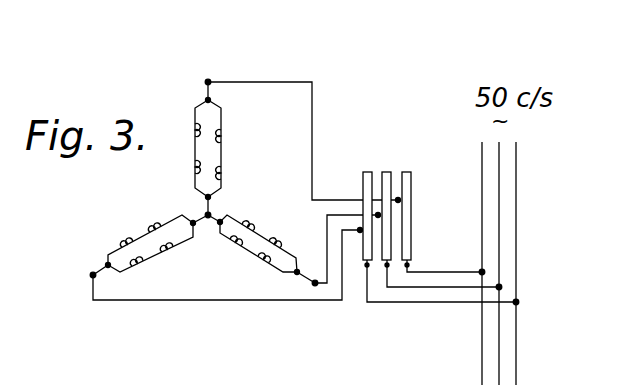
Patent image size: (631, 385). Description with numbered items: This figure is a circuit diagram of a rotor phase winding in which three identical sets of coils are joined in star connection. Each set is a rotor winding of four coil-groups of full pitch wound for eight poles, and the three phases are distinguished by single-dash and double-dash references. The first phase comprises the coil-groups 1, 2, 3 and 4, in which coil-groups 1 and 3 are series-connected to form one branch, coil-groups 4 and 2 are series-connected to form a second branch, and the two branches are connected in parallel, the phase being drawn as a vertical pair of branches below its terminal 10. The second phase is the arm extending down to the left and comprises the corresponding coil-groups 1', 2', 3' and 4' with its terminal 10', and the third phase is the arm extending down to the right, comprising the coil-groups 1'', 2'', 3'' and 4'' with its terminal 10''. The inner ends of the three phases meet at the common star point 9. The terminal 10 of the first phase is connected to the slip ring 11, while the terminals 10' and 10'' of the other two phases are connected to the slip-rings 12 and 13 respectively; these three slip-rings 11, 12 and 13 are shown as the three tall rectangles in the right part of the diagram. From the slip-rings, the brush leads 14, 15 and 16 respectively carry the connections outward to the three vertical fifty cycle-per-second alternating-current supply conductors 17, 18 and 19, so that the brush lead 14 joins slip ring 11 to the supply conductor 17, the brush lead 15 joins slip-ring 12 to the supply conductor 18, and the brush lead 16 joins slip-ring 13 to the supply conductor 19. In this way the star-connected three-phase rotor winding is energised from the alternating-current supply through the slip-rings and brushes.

The coil-group 1 is at (175, 171).
The coil-group 2 is at (235, 130).
The coil-group 3 is at (180, 119).
The coil-group 4 is at (233, 171).
The star point 9 is at (212, 211).
The terminal 10 is at (204, 66).
The coil-group 1' is at (185, 262).
The coil-group 2' is at (115, 226).
The coil-group 3' is at (152, 276).
The coil-group 4' is at (151, 212).
The terminal 10' is at (74, 272).
The coil-group 1'' is at (262, 210).
The coil-group 2'' is at (258, 275).
The coil-group 3'' is at (284, 231).
The coil-group 4'' is at (227, 264).
The terminal 10'' is at (311, 307).
The slip ring 11 is at (407, 172).
The slip-ring 12 is at (387, 172).
The slip-ring 13 is at (366, 172).
The brush lead 14 is at (473, 275).
The brush lead 15 is at (438, 288).
The brush lead 16 is at (411, 302).
The A.C. supply conductor 17 is at (482, 168).
The A.C. supply conductor 18 is at (499, 212).
The A.C. supply conductor 19 is at (516, 250).